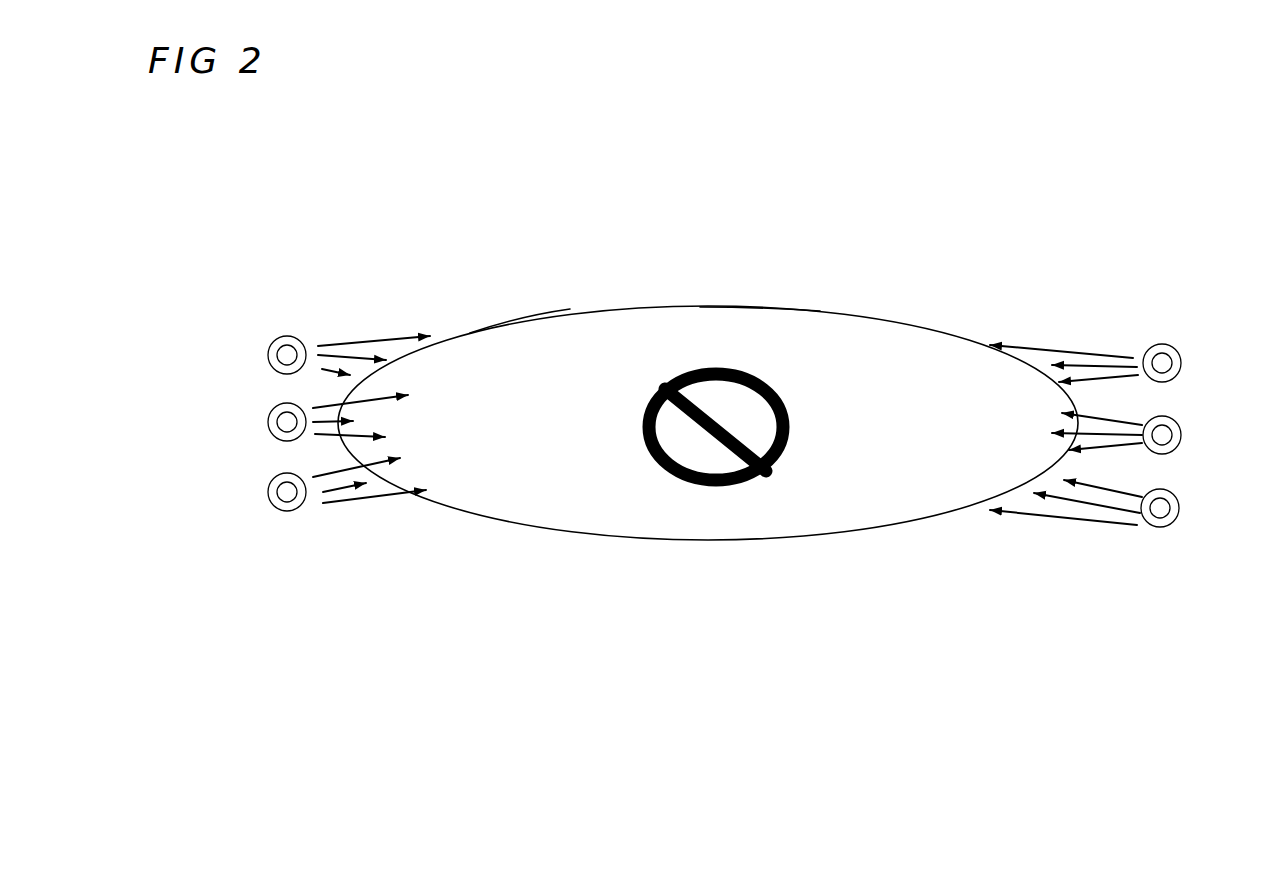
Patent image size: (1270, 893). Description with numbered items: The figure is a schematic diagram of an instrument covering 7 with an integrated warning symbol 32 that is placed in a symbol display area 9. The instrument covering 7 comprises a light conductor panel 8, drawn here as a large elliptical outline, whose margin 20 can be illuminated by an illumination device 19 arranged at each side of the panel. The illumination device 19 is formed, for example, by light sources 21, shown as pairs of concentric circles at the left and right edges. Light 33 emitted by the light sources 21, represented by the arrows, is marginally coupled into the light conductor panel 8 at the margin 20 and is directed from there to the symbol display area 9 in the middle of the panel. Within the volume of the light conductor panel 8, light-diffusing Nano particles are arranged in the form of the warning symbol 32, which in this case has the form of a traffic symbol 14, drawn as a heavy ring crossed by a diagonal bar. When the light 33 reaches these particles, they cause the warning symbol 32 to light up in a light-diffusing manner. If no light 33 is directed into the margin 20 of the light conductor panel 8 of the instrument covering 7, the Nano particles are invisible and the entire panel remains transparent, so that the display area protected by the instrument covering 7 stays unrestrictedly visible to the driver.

The instrument covering 7 is at (931, 326).
The light conductor panel 8 is at (749, 326).
The symbol display area 9 is at (792, 416).
The traffic symbol 14 is at (672, 381).
The illumination device 19 is at (287, 305).
The margin 20 is at (526, 316).
The light sources 21 is at (266, 353).
The warning symbol 32 is at (654, 456).
The light 33 is at (360, 502).